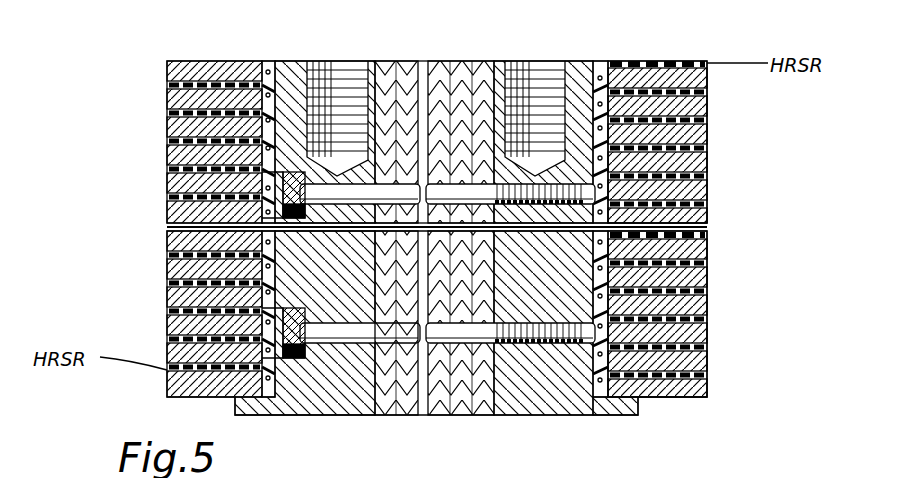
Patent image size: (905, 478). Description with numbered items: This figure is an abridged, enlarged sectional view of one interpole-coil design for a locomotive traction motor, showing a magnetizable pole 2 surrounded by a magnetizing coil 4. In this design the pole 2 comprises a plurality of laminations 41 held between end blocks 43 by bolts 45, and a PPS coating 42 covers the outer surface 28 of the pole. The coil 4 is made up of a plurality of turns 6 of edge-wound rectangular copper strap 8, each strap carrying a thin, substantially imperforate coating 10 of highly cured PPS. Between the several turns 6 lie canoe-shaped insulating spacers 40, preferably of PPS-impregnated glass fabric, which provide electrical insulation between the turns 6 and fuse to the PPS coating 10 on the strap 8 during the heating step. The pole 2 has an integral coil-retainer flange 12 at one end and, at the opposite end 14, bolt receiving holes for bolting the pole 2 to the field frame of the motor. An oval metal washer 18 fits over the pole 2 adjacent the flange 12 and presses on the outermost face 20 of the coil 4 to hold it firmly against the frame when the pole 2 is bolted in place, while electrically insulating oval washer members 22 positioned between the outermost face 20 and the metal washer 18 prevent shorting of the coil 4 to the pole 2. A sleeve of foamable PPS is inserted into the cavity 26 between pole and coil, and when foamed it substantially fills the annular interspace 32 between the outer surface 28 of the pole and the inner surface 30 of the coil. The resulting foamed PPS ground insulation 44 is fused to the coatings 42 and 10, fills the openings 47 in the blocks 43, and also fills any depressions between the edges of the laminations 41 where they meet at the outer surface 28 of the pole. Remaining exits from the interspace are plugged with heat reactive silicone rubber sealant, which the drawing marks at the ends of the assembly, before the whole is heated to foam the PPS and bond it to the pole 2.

The magnetizable pole 2 is at (505, 58).
The magnetizing coil 4 is at (712, 238).
The turns 6 is at (707, 118).
The edge-wound rectangular copper strap 8 is at (707, 320).
The PPS coating 10 is at (707, 296).
The coil-retainer flange 12 is at (627, 410).
The opposite end of the pole 14 is at (572, 61).
The oval metal washer 18 is at (188, 397).
The outermost face of the coil 20 is at (707, 392).
The electrically insulating oval washer members 22 is at (707, 387).
The cavity 26 is at (167, 172).
The outer surface of the pole 28 is at (287, 61).
The inner surface of the coil 30 is at (586, 385).
The annular interspace 32 is at (605, 61).
The canoe-shaped insulating spacers 40 is at (167, 265).
The laminations 41 is at (445, 61).
The PPS coating on the pole 42 is at (300, 61).
The end blocks 43 is at (363, 387).
The foamed PPS ground insulation 44 is at (278, 255).
The bolts 45 is at (355, 330).
The openings in the blocks 47 is at (293, 356).